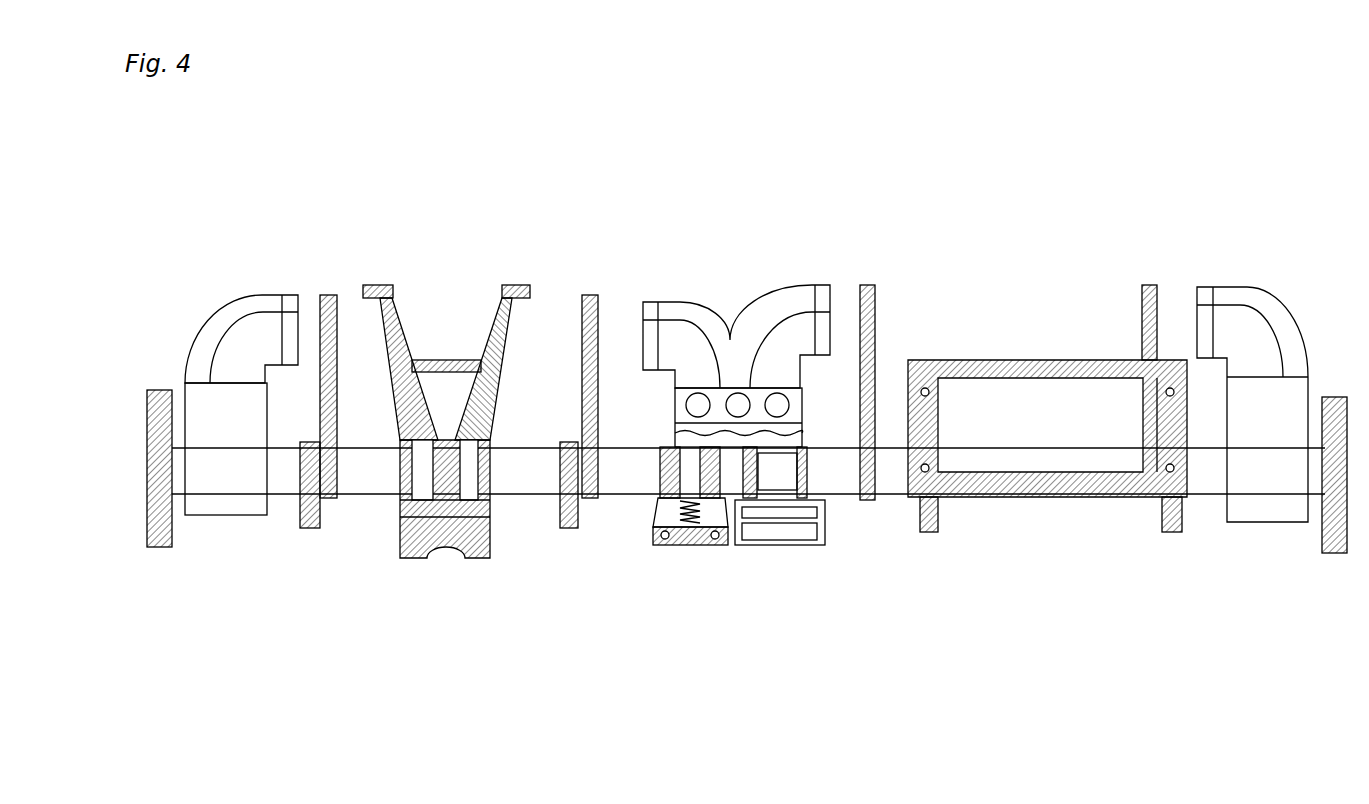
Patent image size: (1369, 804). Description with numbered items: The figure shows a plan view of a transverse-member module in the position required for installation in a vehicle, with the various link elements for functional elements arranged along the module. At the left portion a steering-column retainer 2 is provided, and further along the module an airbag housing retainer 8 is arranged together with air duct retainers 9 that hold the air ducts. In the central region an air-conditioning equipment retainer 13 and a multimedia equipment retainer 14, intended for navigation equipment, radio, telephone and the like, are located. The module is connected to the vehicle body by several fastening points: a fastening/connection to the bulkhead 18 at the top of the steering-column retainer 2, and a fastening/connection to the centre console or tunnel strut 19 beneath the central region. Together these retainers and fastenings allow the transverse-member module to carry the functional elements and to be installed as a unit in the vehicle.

The steering-column retainer 2 is at (420, 562).
The airbag housing retainer 8 is at (945, 365).
The air duct retainer 9 is at (1142, 318).
The air-conditioning equipment retainer 13 is at (825, 525).
The multimedia equipment retainer 14 is at (783, 542).
The fastening/connection to bulkhead 18 is at (525, 288).
The fastening/connection to centre console/tunnel strut 19 is at (698, 547).